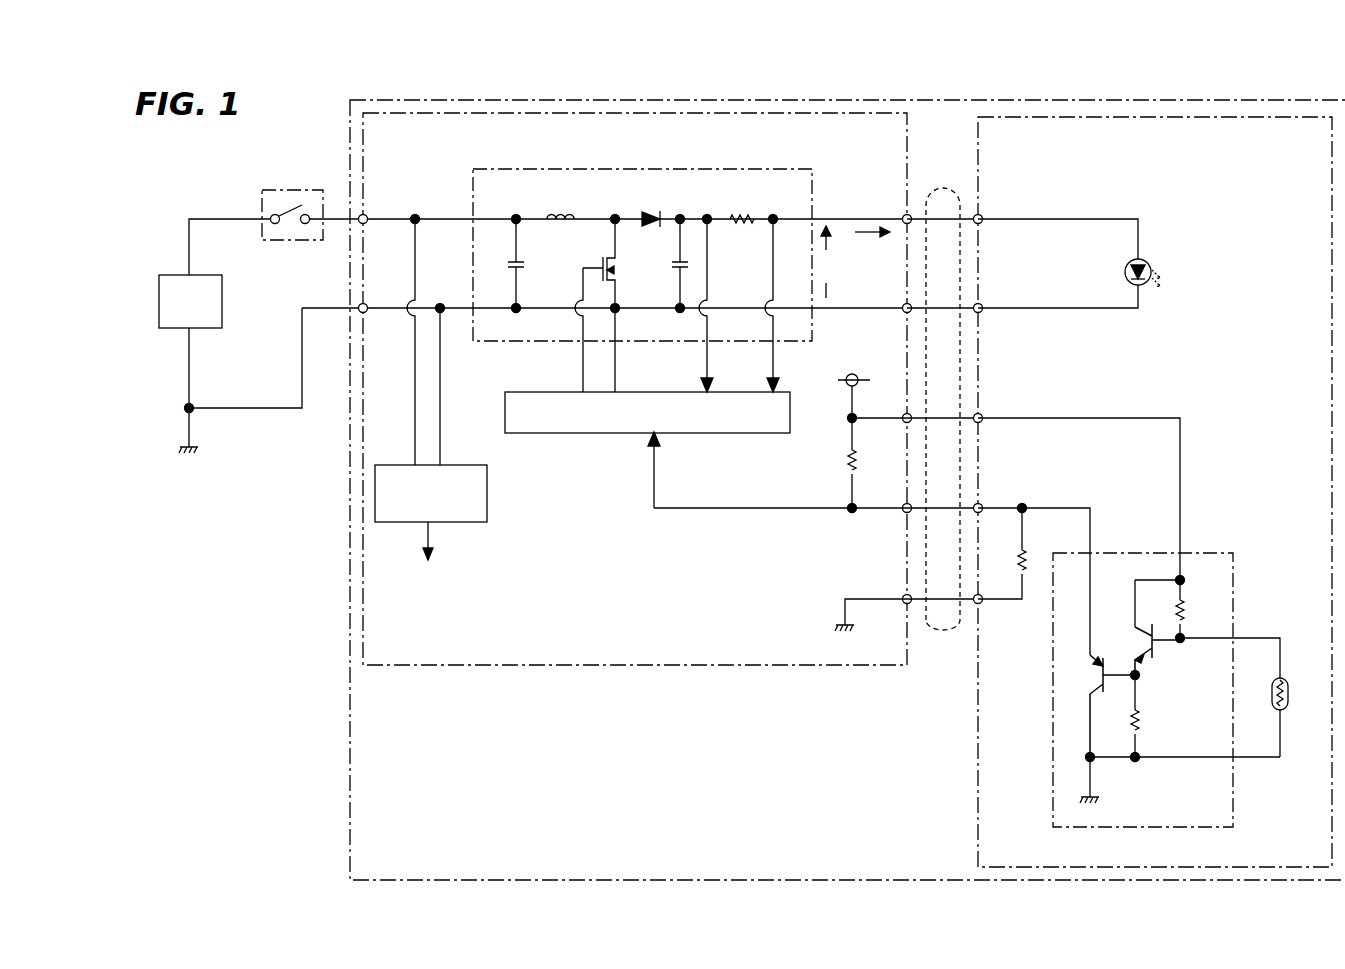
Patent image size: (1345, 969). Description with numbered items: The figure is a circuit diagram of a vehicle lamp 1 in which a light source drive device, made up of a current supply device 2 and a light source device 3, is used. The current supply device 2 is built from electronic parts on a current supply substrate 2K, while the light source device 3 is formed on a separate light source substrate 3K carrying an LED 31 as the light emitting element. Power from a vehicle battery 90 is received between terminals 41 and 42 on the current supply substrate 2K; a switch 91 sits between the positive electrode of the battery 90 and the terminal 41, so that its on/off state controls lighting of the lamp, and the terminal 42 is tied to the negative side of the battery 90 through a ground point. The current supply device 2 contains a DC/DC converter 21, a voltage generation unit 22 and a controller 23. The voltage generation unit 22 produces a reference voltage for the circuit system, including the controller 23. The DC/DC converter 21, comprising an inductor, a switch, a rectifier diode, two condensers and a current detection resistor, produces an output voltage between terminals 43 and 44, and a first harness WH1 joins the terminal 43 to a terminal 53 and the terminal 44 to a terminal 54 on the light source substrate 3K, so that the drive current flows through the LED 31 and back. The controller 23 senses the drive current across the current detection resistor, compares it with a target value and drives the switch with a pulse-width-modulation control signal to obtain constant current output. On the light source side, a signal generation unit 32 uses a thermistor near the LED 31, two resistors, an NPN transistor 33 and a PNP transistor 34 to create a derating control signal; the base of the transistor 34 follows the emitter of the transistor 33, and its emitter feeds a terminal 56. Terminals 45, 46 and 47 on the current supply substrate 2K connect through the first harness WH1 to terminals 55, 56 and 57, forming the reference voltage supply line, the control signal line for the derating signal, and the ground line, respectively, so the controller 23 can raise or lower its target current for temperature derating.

The vehicle lamp 1 is at (350, 125).
The current supply device 2 is at (607, 415).
The current supply substrate 2K is at (566, 665).
The light source device 3 is at (1116, 492).
The light source substrate 3K is at (978, 852).
The DC/DC converter 21 is at (810, 169).
The voltage generation unit 22 is at (487, 490).
The controller 23 is at (738, 433).
The LED 31 is at (1150, 260).
The signal generation unit 32 is at (1205, 553).
The transistor 33 is at (1160, 645).
The transistor 34 is at (1098, 665).
The terminal 41 is at (366, 215).
The terminal 42 is at (366, 312).
The terminal 43 is at (903, 215).
The terminal 44 is at (903, 305).
The terminal 45 is at (904, 412).
The terminal 46 is at (904, 513).
The terminal 47 is at (903, 597).
The terminal 53 is at (982, 215).
The terminal 54 is at (982, 305).
The terminal 55 is at (982, 412).
The terminal 56 is at (982, 504).
The terminal 57 is at (982, 603).
The battery 90 is at (175, 275).
The switch 91 is at (265, 190).
The first harness WH1 is at (948, 630).